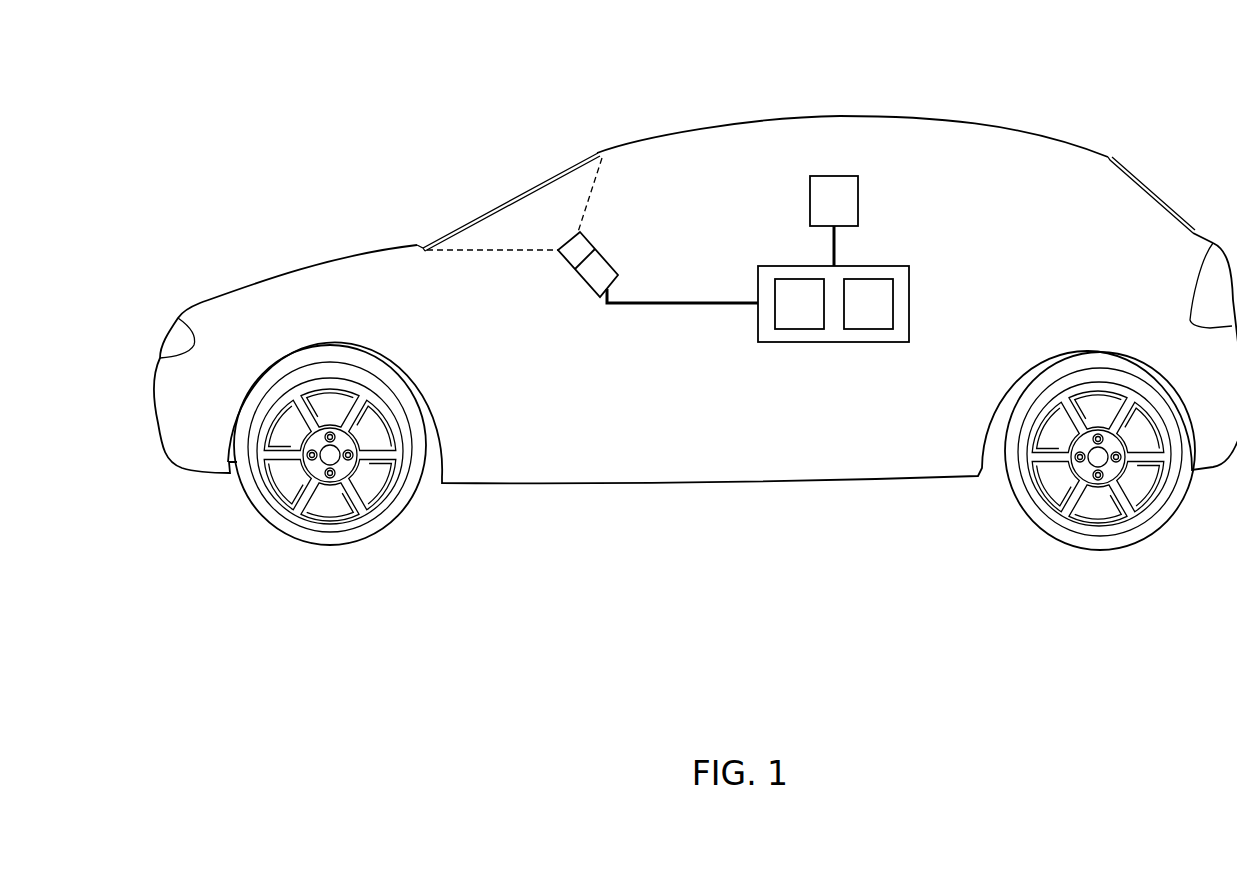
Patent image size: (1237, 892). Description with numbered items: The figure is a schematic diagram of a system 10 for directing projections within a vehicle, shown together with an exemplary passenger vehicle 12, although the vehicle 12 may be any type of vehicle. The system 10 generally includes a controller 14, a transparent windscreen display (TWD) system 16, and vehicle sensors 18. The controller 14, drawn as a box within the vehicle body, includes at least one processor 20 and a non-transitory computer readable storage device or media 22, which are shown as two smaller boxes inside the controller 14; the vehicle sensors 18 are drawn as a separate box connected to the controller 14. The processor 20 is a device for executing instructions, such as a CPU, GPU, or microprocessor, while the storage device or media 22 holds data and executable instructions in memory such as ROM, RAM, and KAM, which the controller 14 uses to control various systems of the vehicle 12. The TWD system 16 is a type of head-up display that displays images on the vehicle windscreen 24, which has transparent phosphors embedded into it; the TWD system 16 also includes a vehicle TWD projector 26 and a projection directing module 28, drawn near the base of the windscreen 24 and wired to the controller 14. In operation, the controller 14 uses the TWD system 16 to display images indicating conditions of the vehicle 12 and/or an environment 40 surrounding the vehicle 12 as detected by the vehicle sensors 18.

The system for directing projections within a vehicle 10 is at (983, 253).
The vehicle 12 is at (1022, 130).
The controller 14 is at (909, 342).
The transparent windscreen display (TWD) system 16 is at (498, 190).
The vehicle sensors 18 is at (820, 211).
The processor 20 is at (786, 314).
The non-transitory computer readable storage device or media 22 is at (854, 314).
The vehicle windscreen 24 is at (550, 180).
The vehicle TWD projector 26 is at (605, 273).
The projection directing module 28 is at (573, 258).
The environment 40 is at (289, 156).